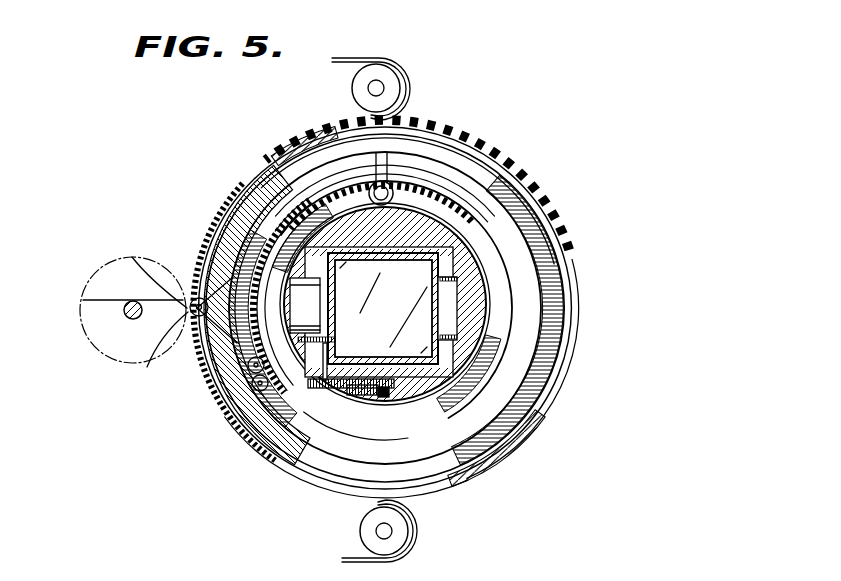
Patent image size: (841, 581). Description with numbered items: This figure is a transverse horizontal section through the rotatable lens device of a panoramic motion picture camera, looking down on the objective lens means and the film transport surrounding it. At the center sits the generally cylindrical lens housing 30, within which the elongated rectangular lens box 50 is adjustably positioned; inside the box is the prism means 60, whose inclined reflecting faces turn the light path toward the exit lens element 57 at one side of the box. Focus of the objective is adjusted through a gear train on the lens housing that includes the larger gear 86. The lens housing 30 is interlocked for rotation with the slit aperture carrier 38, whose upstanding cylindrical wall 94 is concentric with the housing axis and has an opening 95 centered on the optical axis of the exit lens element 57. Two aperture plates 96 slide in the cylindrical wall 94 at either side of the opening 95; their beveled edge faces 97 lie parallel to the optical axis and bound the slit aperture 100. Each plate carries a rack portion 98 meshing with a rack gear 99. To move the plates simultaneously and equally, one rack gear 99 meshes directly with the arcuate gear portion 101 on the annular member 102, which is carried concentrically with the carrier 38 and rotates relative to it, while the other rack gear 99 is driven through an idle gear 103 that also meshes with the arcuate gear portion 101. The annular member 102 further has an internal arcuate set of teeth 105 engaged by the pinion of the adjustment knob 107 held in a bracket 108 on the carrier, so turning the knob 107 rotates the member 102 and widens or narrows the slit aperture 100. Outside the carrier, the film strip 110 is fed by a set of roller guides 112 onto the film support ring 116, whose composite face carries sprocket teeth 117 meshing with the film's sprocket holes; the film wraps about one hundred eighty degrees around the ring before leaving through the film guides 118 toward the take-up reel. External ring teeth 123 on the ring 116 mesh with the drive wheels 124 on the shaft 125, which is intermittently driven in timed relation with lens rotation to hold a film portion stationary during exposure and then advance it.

The lens housing 30 is at (482, 221).
The slit aperture carrier 38 is at (571, 284).
The objective lens carrying box 50 is at (480, 257).
The exit lens element 57 is at (312, 310).
The prism means 60 is at (383, 308).
The larger gear 86 is at (396, 392).
The cylindrical wall 94 is at (315, 147).
The opening 95 is at (190, 300).
The aperture plates 96 is at (230, 228).
The edge face 97 is at (182, 348).
The rack portion 98 is at (208, 287).
The rack gear 99 is at (247, 200).
The slit aperture 100 is at (132, 257).
The arcuate gear portion 101 is at (275, 168).
The annular member 102 is at (447, 200).
The idle gear 103 is at (250, 380).
The internal arcuate set of teeth 105 is at (458, 208).
The adjustment knob 107 is at (390, 183).
The bracket 108 is at (372, 157).
The film strip 110 is at (346, 56).
The roller guides 112 is at (431, 549).
The film support ring 116 is at (563, 344).
The sprocket teeth 117 is at (557, 404).
The film guides 118 is at (415, 60).
The ring teeth 123 is at (526, 173).
The drive wheels 124 is at (103, 343).
The shaft 125 is at (124, 313).